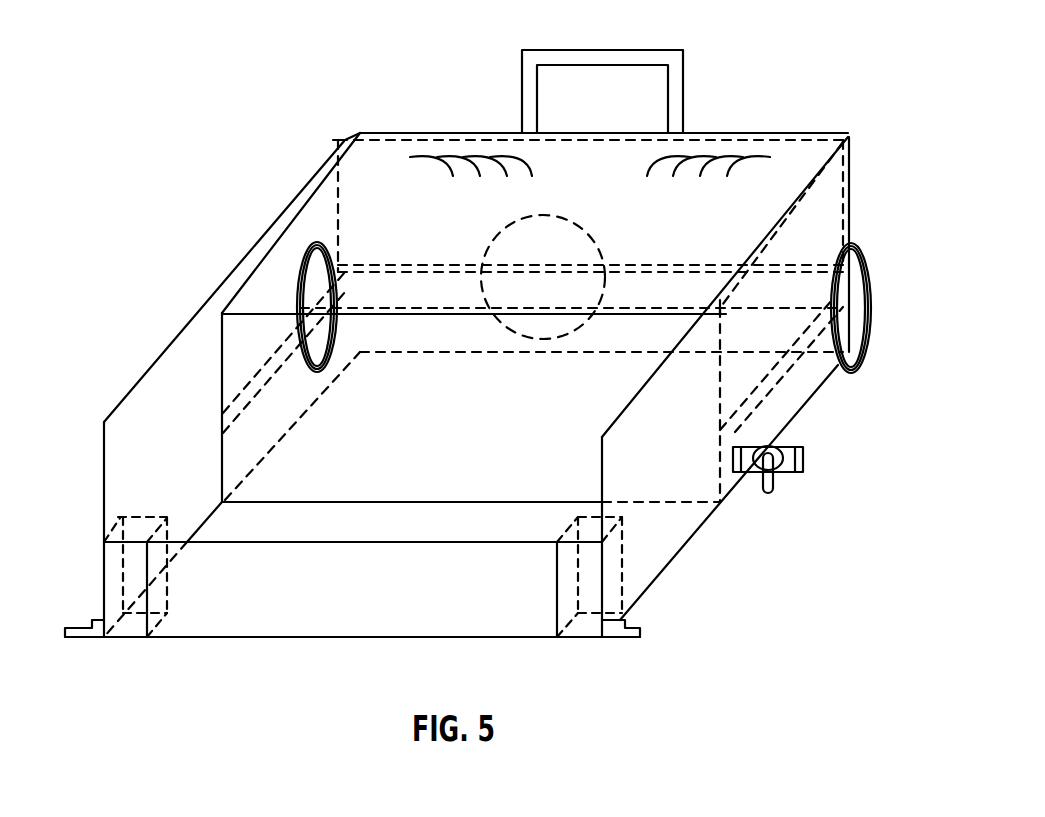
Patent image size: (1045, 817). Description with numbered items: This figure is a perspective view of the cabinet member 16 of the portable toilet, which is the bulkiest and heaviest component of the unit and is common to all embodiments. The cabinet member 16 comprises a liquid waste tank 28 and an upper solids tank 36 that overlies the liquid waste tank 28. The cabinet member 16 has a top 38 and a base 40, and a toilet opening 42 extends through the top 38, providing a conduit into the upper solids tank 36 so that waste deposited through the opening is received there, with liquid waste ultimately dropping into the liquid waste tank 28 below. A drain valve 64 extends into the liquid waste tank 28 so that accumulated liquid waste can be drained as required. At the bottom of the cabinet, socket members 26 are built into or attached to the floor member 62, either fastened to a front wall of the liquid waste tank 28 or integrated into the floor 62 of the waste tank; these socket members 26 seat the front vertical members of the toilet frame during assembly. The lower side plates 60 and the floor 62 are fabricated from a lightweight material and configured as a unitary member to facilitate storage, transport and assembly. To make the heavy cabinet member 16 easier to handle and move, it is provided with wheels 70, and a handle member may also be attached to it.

The cabinet member 16 is at (862, 203).
The socket member 26 is at (103, 575).
The liquid waste tank 28 is at (810, 373).
The upper solids tank 36 is at (838, 171).
The top 38 is at (390, 162).
The base 40 is at (793, 418).
The toilet opening 42 is at (553, 214).
The lower side plates 60 is at (688, 458).
The floor member 62 is at (680, 525).
The drain valve 64 is at (803, 467).
The wheels 70 is at (310, 243).